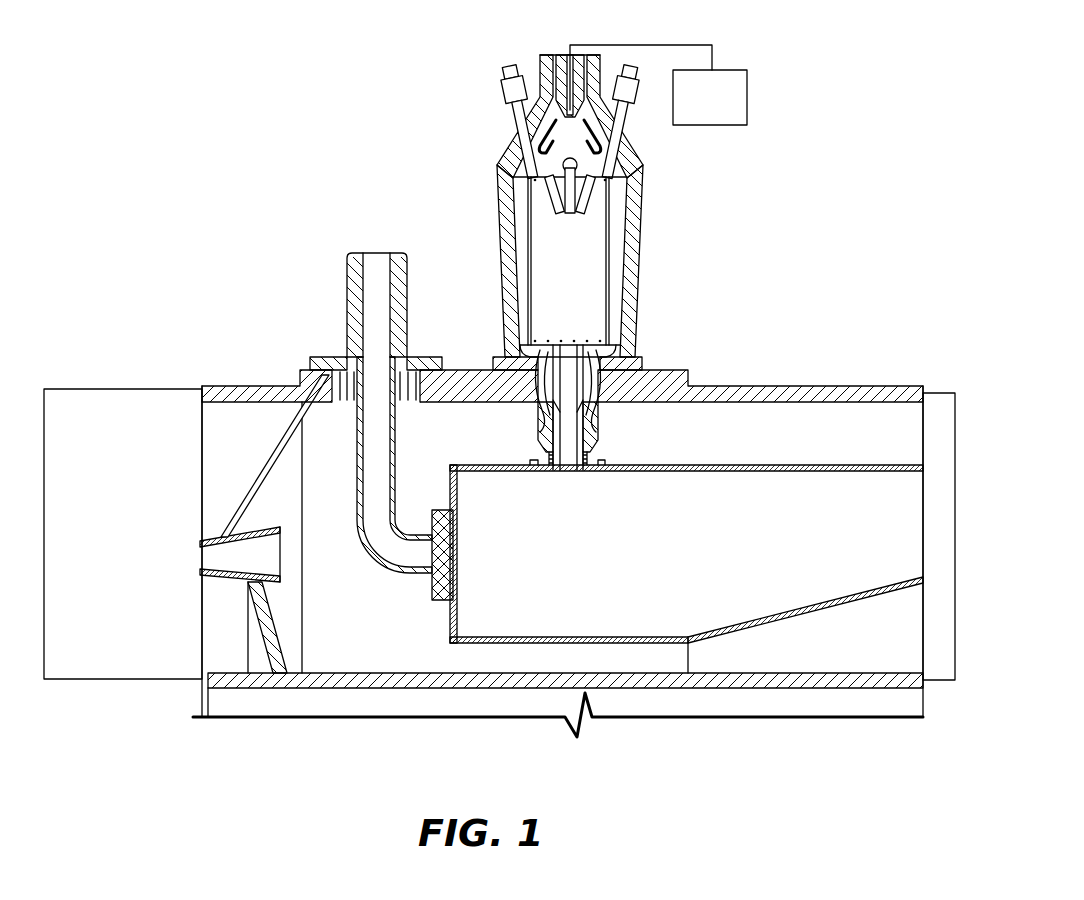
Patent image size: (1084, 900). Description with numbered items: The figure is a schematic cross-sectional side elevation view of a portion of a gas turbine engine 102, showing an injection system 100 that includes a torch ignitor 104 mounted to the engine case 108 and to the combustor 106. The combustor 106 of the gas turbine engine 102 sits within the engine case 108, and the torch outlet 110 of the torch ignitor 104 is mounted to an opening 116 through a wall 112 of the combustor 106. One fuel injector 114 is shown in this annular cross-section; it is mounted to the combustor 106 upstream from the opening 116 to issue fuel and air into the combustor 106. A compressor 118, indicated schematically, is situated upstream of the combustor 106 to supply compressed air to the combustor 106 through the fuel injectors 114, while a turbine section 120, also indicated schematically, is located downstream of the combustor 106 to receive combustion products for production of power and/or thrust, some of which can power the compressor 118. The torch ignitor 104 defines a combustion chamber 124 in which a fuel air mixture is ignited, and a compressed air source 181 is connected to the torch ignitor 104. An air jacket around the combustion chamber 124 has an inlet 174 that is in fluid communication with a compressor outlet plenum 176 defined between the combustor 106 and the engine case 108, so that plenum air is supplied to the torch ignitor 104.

The injection system 100 is at (700, 178).
The gas turbine engine 102 is at (158, 355).
The torch ignitor 104 is at (503, 138).
The combustor 106 is at (726, 571).
The engine case 108 is at (720, 385).
The torch outlet 110 is at (533, 453).
The wall 112 is at (663, 473).
The fuel injector 114 is at (357, 293).
The opening 116 is at (555, 470).
The compressor 118 is at (99, 514).
The turbine section 120 is at (948, 672).
The combustion chamber 124 is at (541, 279).
The inlet 174 is at (597, 420).
The compressor outlet plenum 176 is at (768, 446).
The compressed air source 181 is at (691, 111).